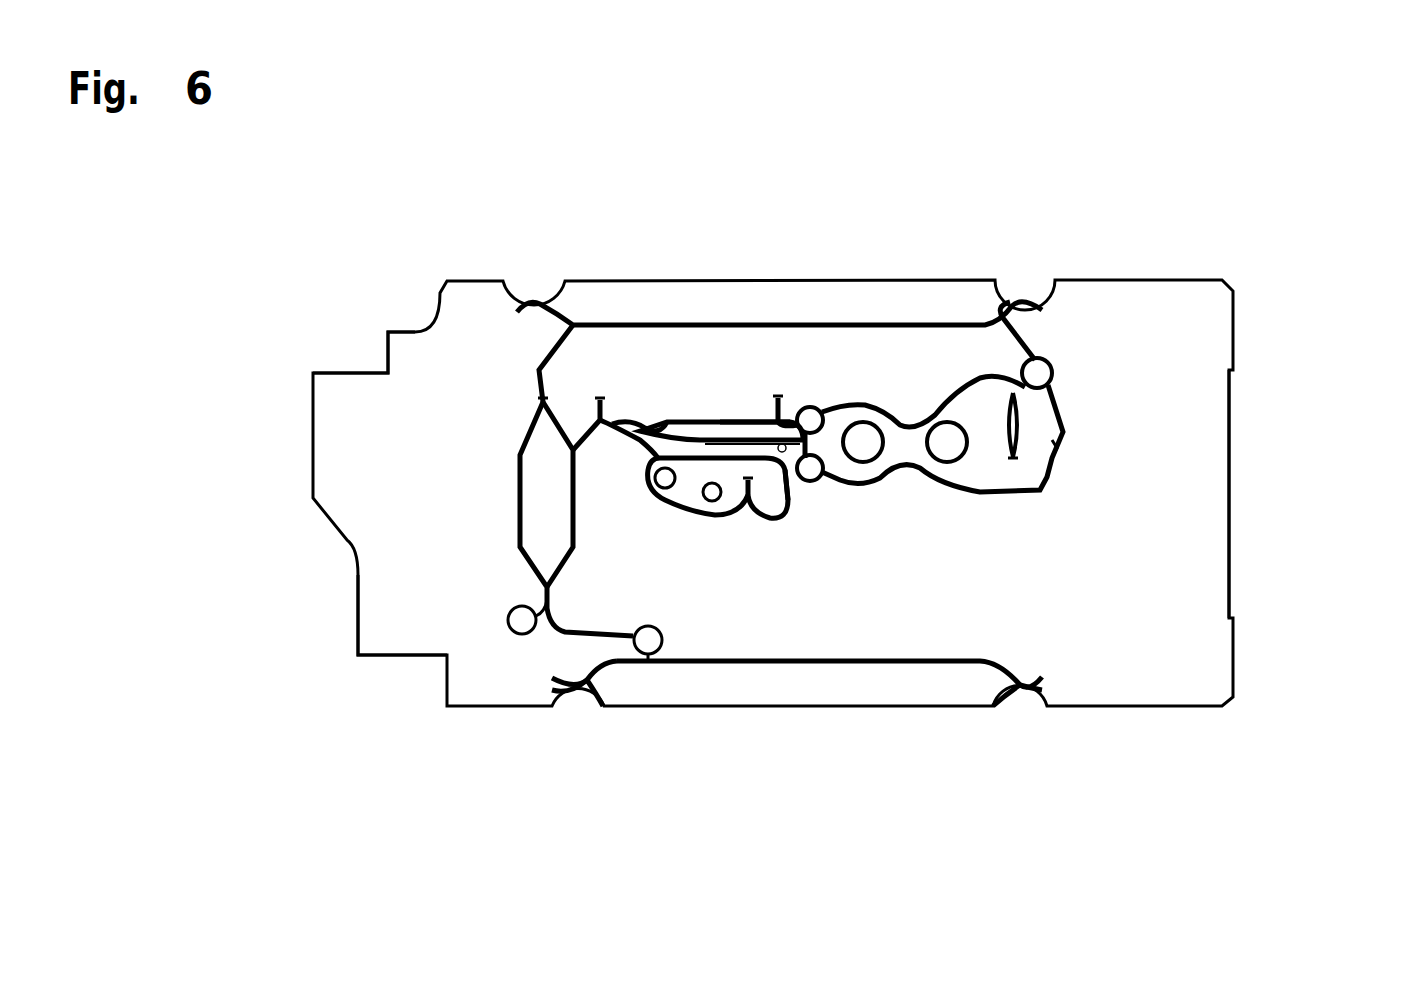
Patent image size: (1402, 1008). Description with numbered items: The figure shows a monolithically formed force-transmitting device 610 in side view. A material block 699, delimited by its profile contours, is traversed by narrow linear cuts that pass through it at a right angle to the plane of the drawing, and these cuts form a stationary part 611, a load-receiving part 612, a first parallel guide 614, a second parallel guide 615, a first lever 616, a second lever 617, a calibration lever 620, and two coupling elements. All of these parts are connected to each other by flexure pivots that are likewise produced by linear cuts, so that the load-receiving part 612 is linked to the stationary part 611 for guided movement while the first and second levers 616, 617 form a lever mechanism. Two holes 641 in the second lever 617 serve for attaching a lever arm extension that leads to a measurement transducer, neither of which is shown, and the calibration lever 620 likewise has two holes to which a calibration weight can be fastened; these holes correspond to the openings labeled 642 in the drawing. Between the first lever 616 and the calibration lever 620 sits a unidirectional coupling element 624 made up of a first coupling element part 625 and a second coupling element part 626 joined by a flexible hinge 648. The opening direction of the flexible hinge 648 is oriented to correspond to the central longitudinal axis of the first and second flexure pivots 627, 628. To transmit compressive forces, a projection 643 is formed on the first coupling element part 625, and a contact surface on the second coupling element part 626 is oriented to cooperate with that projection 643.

The force-transmitting device 610 is at (1236, 256).
The material block 699 is at (452, 370).
The stationary part 611 is at (1155, 413).
The load-receiving part 612 is at (403, 588).
The first parallel guide 614 is at (580, 302).
The second parallel guide 615 is at (955, 695).
The first lever 616 is at (848, 362).
The second lever 617 is at (980, 410).
The calibration lever 620 is at (763, 495).
The unidirectional coupling element 624 is at (722, 405).
The first coupling element part 625 is at (748, 432).
The second coupling element part 626 is at (703, 452).
The first flexure pivot 627 is at (791, 398).
The second flexure pivot 628 is at (790, 500).
The holes 641 is at (947, 442).
The ports 642 is at (712, 492).
The projection 643 is at (785, 465).
The flexible hinge 648 is at (653, 437).